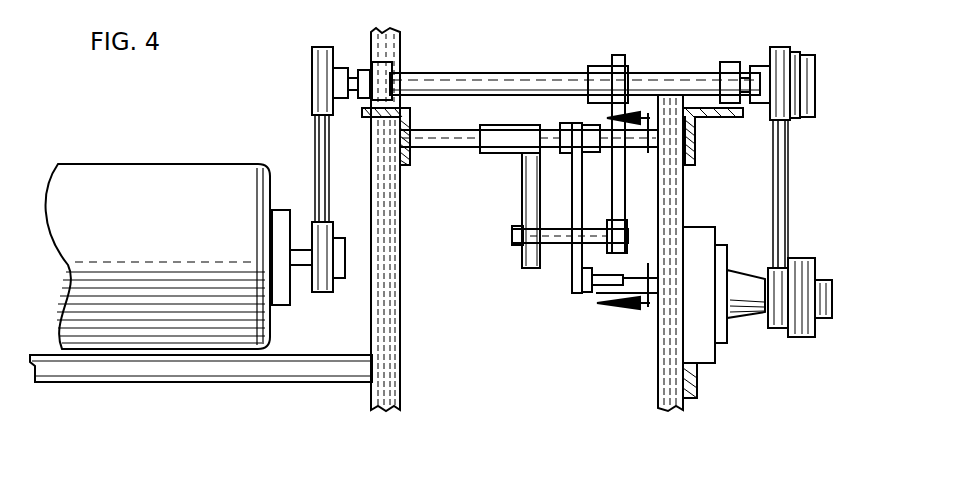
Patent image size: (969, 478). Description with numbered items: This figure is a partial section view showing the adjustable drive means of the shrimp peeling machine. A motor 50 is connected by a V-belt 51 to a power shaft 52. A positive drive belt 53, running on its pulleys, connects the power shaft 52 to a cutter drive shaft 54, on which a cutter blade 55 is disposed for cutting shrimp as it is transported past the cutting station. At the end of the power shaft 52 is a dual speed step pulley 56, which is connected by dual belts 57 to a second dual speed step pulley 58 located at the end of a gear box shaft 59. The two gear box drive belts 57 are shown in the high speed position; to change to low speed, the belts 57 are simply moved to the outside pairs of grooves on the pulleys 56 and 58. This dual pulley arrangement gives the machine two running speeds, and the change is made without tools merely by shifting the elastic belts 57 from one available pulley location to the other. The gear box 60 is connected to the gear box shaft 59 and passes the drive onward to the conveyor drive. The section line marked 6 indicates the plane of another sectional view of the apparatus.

The motor 50 is at (92, 172).
The belt drive 51 is at (322, 145).
The upper shaft 52 is at (468, 80).
The disc 53 is at (614, 110).
The lower shaft 54 is at (552, 245).
The intermediate shaft pulley 55 is at (530, 218).
The stepped pulley 56 is at (780, 47).
The belt 57 is at (788, 190).
The pulley 58 is at (800, 262).
The conical member 59 is at (768, 320).
The housing 60 is at (703, 233).
The section line 6- 6 is at (636, 217).